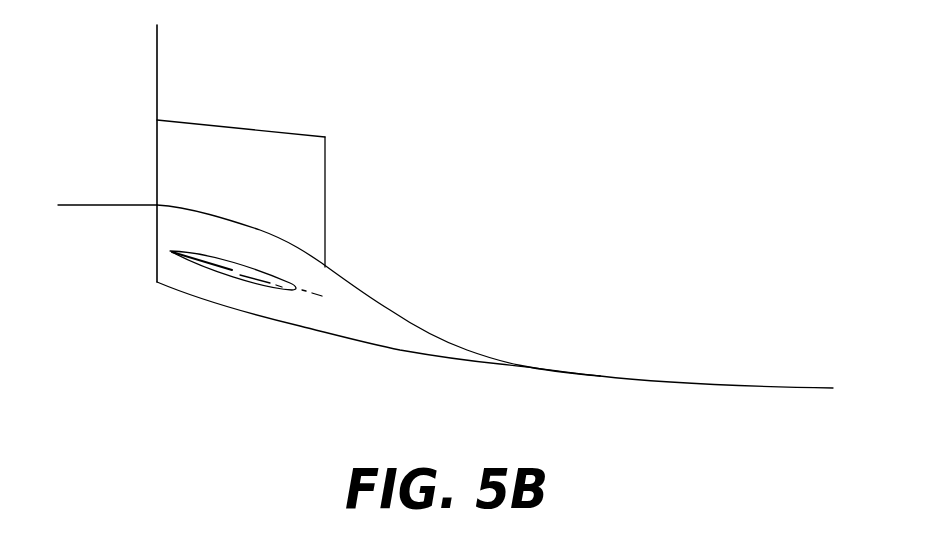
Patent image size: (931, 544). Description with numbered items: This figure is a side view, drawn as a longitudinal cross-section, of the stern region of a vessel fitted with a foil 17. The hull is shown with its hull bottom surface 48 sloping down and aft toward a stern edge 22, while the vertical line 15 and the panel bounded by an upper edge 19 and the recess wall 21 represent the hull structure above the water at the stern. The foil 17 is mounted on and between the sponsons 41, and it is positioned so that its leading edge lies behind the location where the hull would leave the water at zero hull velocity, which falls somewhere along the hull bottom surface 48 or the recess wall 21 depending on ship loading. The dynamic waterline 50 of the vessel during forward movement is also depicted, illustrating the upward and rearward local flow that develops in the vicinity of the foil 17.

The fuselage side wall 15 is at (168, 66).
The nacelle / panel top edge 19 is at (249, 128).
The recess wall 21 is at (325, 188).
The dynamic waterline 50 is at (168, 205).
The sponson 41 is at (165, 271).
The foil 17 is at (230, 270).
The hull bottom surface 48 is at (390, 310).
The trailing edge 22 is at (680, 383).